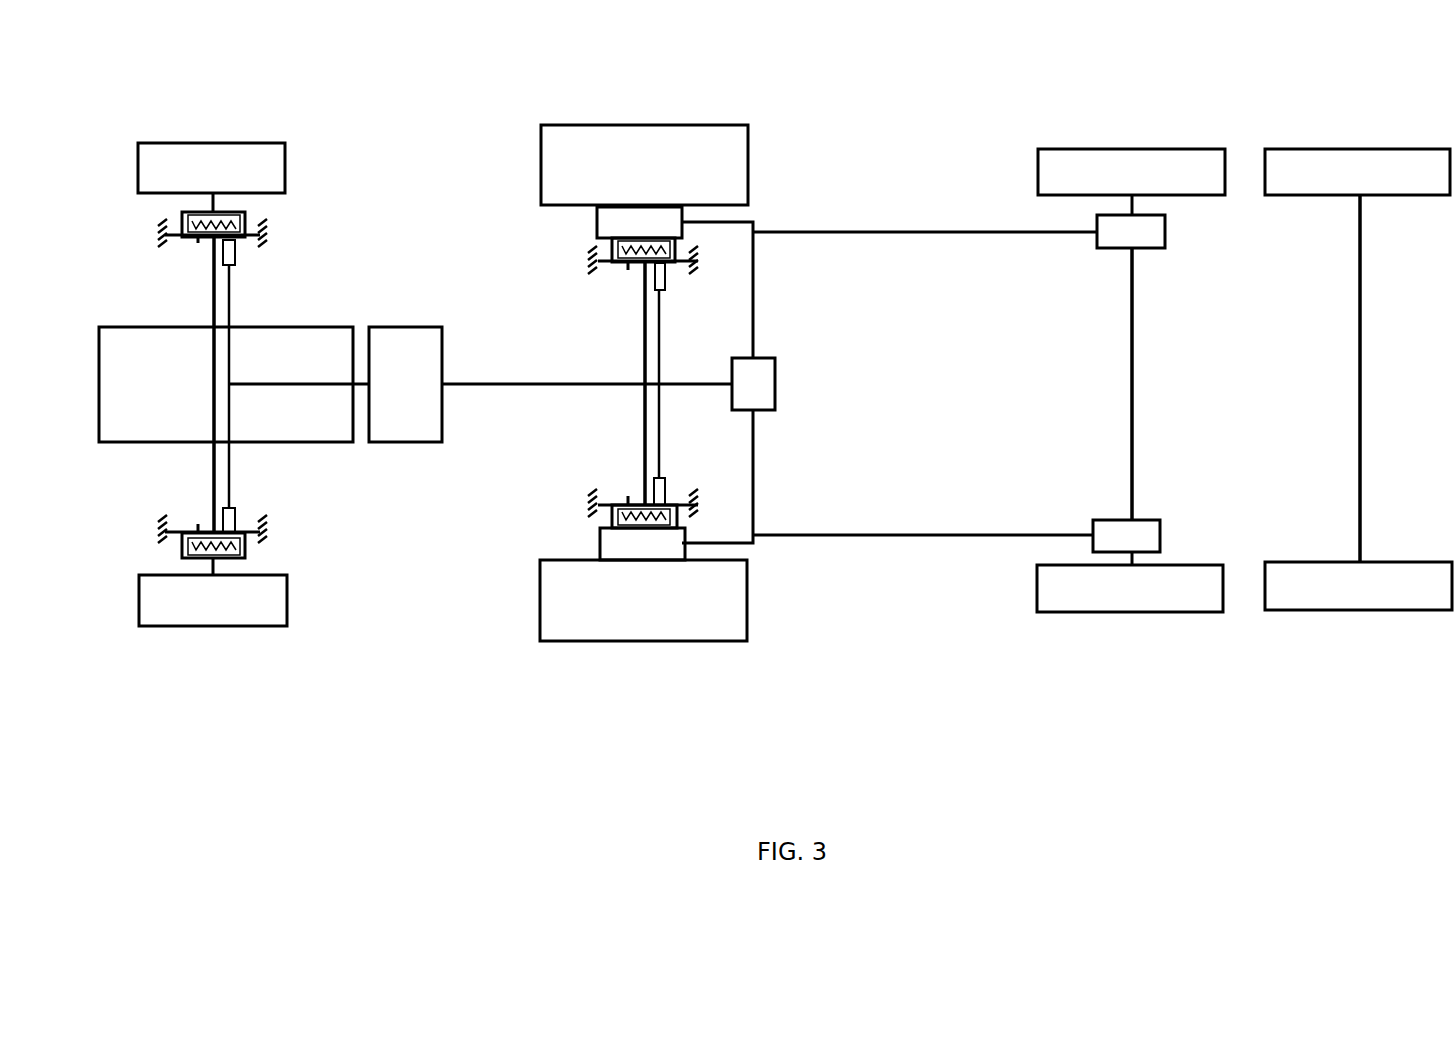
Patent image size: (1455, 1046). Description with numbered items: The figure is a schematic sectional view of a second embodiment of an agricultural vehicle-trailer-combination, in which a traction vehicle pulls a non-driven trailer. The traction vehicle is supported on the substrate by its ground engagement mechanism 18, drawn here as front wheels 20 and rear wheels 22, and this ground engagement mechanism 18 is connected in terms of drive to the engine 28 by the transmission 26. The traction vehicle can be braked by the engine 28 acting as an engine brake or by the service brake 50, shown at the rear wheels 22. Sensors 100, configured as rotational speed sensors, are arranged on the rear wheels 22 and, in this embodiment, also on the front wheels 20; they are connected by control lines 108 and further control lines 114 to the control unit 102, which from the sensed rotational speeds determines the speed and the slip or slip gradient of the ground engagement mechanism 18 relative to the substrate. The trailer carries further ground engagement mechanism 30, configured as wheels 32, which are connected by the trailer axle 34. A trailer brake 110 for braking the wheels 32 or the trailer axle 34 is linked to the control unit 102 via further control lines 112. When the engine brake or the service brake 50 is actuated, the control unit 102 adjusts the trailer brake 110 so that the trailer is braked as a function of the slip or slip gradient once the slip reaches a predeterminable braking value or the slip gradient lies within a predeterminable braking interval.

The ground engagement mechanism 18 is at (223, 177).
The front wheels 20 is at (212, 390).
The rear wheels 22 is at (644, 383).
The transmission 26 is at (400, 348).
The engine 28 is at (318, 353).
The further ground engagement mechanism 30 is at (1244, 382).
The wheels 32 is at (1244, 382).
The trailer axle 34 is at (1135, 350).
The service brake 50 is at (640, 222).
The sensor 100 is at (234, 238).
The control unit 102 is at (760, 382).
The control lines 108 is at (747, 217).
The trailer brake 110 is at (1145, 242).
The further control lines 112 is at (988, 227).
The further control lines 114 is at (230, 303).